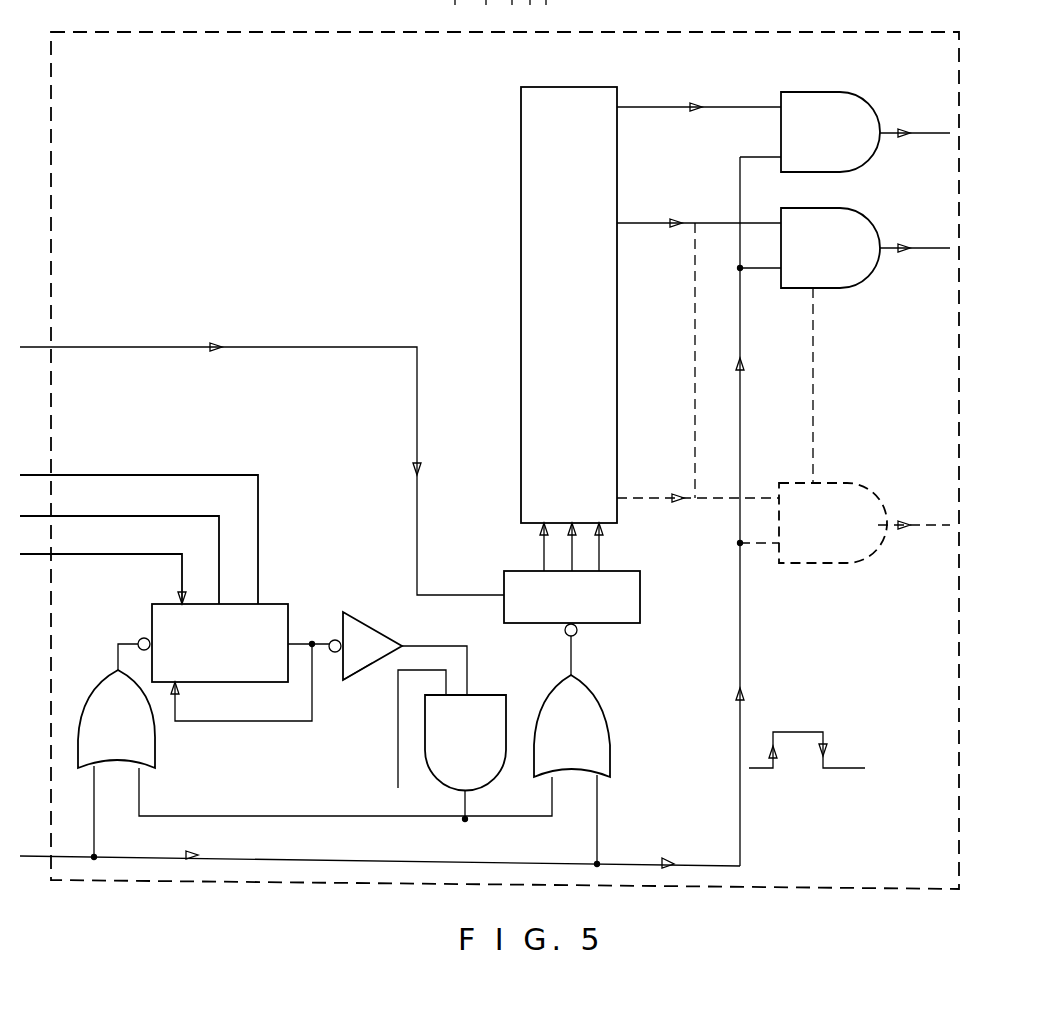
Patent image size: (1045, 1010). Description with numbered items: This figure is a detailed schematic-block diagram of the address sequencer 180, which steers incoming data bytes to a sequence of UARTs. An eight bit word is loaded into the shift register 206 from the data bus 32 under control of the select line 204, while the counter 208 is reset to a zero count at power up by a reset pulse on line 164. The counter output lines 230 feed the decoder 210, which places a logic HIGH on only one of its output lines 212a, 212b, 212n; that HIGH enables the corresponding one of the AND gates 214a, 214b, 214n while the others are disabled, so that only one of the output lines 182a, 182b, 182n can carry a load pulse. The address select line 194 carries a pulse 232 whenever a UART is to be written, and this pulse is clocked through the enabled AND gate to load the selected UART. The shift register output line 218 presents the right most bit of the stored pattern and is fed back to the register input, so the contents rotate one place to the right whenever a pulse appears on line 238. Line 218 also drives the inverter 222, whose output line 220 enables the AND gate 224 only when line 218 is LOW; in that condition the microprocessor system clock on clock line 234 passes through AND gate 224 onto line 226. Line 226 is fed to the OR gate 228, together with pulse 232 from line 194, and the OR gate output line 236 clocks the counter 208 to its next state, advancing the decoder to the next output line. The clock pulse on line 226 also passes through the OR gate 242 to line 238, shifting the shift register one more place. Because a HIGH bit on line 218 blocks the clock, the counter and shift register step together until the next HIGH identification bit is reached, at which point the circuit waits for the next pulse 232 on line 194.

The address sequencer 180 is at (106, 32).
The reset pulse line 164 is at (134, 347).
The data bus 32 is at (104, 475).
The select line 204 is at (140, 556).
The shift register 206 is at (280, 604).
The shift clock line 238 is at (132, 636).
The OR gate 242 is at (152, 732).
The shift register output line 218 is at (224, 721).
The AND gate output line 226 is at (228, 817).
The inverter output line 220 is at (448, 624).
The inverter 222 is at (372, 668).
The AND gate 224 is at (498, 695).
The clock line 234 is at (398, 788).
The counter 208 is at (640, 600).
The counter output lines 230 is at (601, 552).
The OR gate output line 236 is at (575, 662).
The OR gate 228 is at (610, 734).
The decoder 210 is at (521, 210).
The decoder output line 212a is at (656, 107).
The decoder output line 212b is at (658, 223).
The decoder output line 212n is at (688, 476).
The AND gate 214a is at (876, 80).
The AND gate 214b is at (812, 208).
The AND gate 214n is at (848, 483).
The output line 182a is at (926, 112).
The output line 182b is at (898, 248).
The output line 182n is at (908, 525).
The address select line 194 is at (740, 658).
The pulse 232 is at (790, 728).